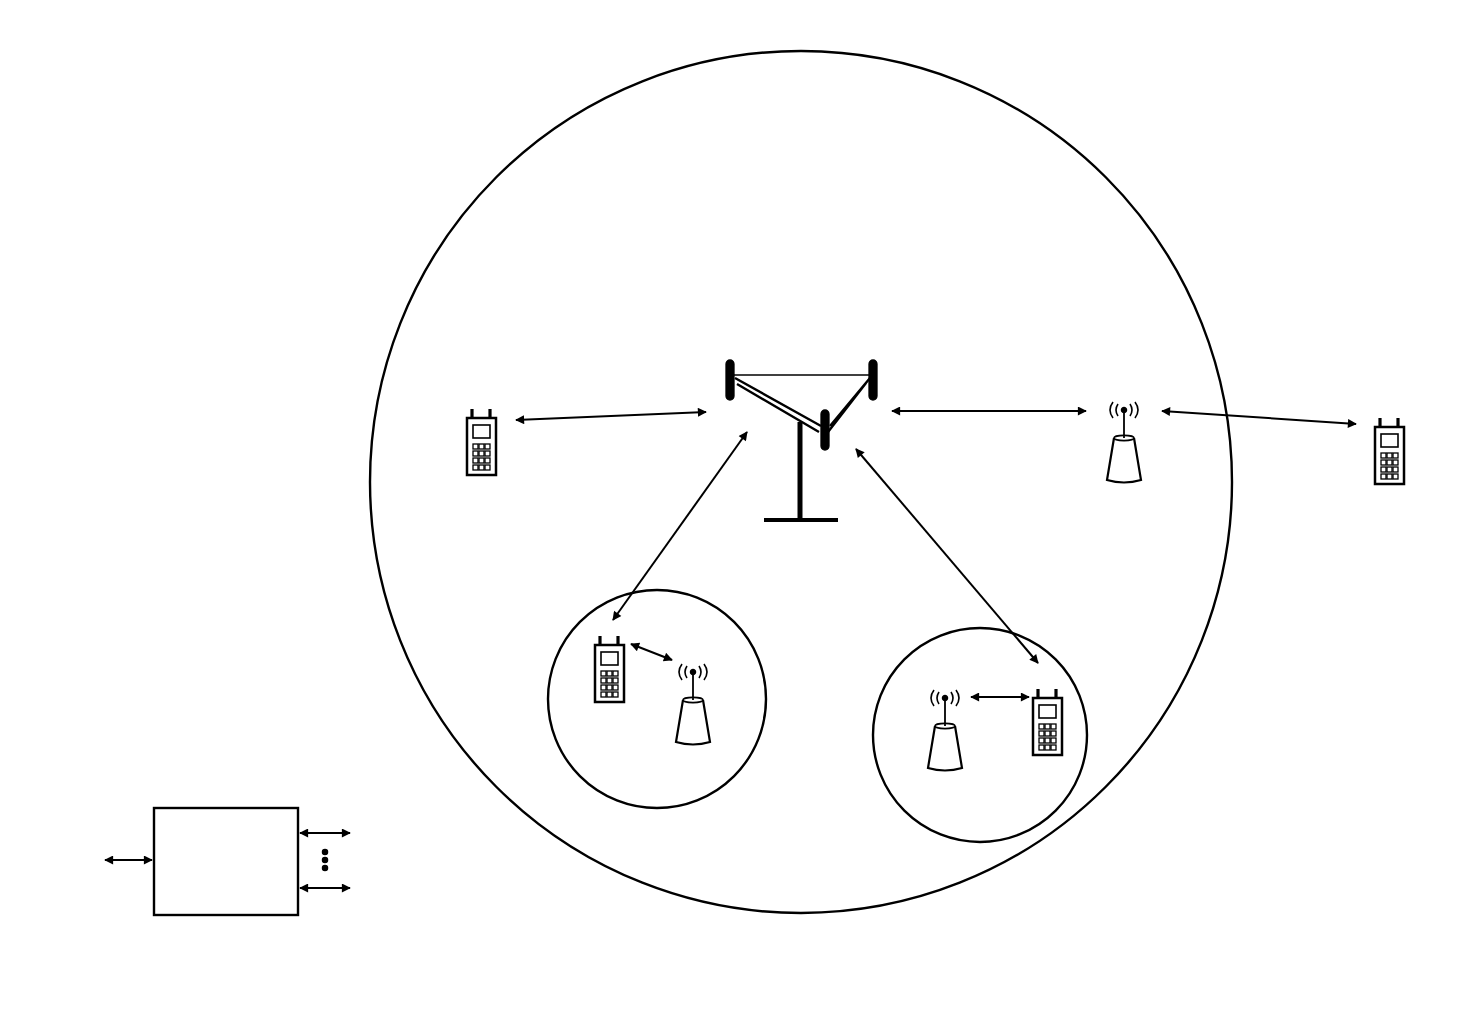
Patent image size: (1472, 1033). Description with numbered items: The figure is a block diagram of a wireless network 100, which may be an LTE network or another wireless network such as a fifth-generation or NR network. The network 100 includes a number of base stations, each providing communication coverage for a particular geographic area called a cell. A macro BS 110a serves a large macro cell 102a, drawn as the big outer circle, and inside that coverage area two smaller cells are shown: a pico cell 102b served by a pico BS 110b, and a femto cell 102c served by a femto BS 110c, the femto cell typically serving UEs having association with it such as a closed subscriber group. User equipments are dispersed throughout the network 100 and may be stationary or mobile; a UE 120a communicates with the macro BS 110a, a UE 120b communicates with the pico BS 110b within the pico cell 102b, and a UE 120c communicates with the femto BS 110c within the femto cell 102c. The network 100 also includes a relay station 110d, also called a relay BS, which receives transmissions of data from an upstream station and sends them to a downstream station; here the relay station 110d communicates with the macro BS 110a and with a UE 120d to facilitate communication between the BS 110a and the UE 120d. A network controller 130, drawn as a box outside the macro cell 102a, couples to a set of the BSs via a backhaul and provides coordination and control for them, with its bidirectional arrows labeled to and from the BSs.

The wireless network 100 is at (1308, 121).
The macro cell 102a is at (1100, 145).
The pico cell 102b is at (752, 612).
The femto cell 102c is at (896, 663).
The macro BS 110a is at (812, 360).
The pico BS 110b is at (724, 718).
The femto BS 110c is at (928, 753).
The relay station 110d is at (1132, 389).
The UE 120a is at (466, 429).
The UE 120b is at (595, 700).
The UE 120c is at (1033, 752).
The UE 120d is at (1418, 427).
The network controller 130 is at (234, 792).